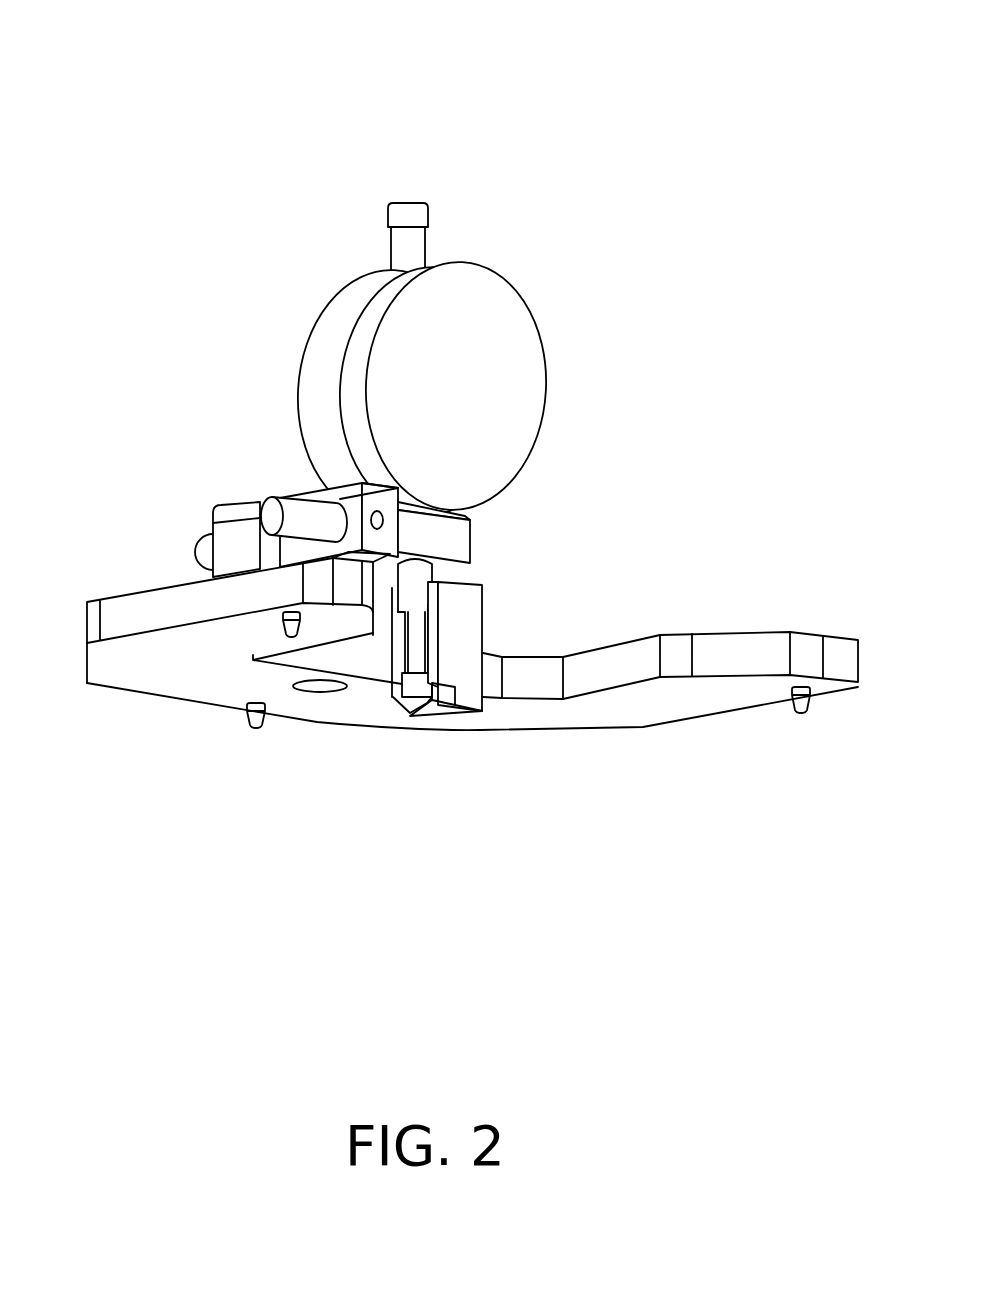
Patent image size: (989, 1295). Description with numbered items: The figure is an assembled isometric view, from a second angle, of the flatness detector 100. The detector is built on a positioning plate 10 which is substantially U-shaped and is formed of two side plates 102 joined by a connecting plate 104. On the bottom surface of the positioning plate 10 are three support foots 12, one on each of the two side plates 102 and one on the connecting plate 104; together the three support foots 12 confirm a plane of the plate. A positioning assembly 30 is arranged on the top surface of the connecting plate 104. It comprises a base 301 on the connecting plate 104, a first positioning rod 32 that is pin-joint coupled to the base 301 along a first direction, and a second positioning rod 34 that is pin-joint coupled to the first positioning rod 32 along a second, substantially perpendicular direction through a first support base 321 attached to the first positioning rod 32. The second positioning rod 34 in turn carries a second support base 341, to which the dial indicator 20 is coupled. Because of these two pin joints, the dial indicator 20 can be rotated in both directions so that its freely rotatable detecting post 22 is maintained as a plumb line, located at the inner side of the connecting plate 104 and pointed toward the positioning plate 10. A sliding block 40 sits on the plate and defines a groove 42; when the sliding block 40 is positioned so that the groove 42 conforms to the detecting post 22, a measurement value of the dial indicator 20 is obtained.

The flatness detector 100 is at (232, 58).
The positioning plate 10 is at (439, 679).
The side plates 102 is at (140, 603).
The connecting plate 104 is at (310, 722).
The support foots 12 is at (247, 722).
The dial indicator 20 is at (490, 272).
The detecting post 22 is at (407, 685).
The positioning assembly 30 is at (367, 486).
The base 301 is at (274, 505).
The first positioning rod 32 is at (193, 542).
The second positioning rod 34 is at (445, 481).
The first support base 321 is at (385, 493).
The second support base 341 is at (433, 527).
The sliding block 40 is at (458, 663).
The groove 42 is at (427, 650).